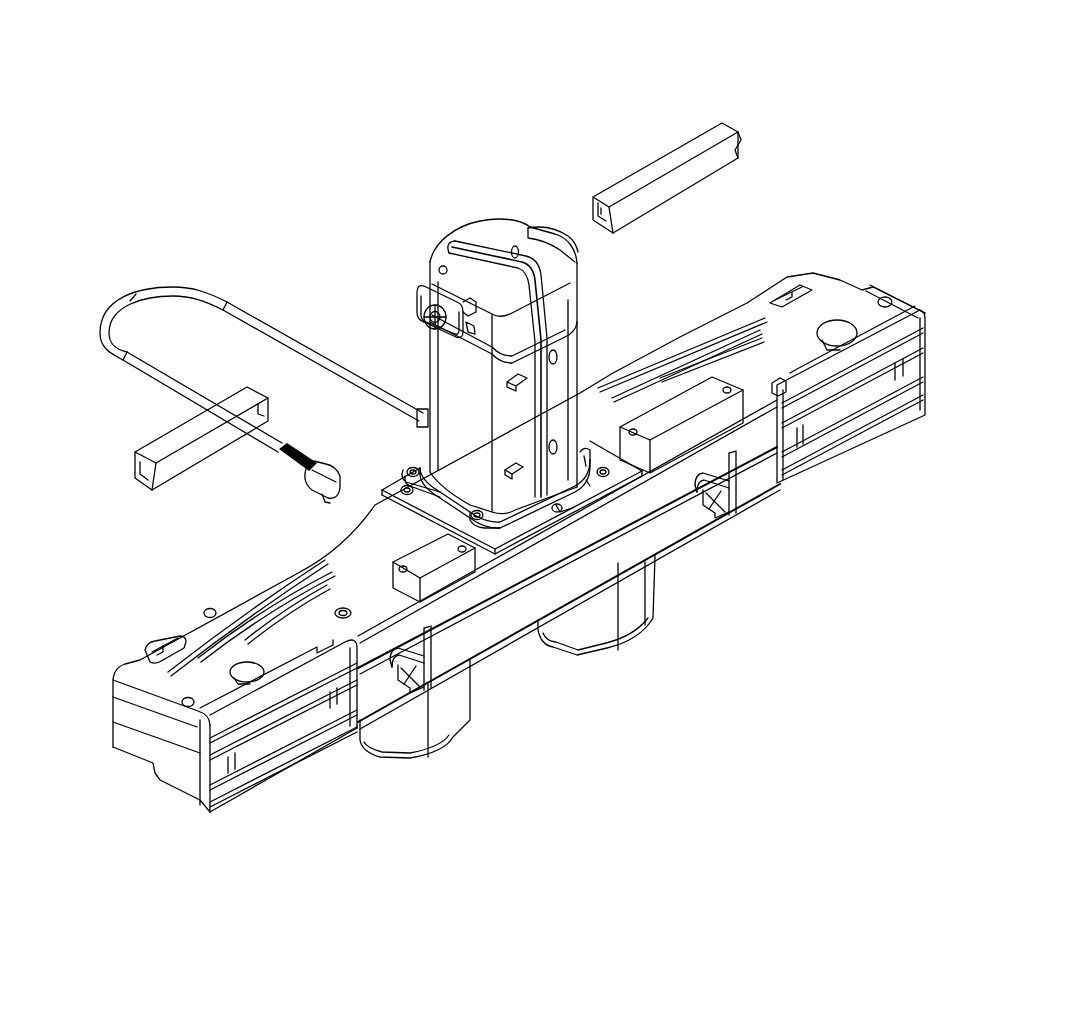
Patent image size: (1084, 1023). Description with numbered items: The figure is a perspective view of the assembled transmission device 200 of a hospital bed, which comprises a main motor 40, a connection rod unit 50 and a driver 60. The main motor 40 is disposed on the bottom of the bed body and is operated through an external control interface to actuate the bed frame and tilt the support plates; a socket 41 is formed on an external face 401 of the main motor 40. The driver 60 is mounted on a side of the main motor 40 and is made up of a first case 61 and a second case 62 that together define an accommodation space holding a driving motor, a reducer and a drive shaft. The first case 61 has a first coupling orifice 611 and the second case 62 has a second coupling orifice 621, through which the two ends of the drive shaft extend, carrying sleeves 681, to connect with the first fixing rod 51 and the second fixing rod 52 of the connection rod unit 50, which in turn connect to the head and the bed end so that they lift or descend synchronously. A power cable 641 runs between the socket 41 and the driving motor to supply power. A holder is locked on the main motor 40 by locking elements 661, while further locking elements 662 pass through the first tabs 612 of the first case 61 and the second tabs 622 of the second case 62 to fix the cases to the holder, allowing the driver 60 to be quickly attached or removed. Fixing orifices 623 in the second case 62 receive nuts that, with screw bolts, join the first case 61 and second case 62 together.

The main motor 40 is at (815, 268).
The socket 41 is at (343, 606).
The external face 401 is at (288, 635).
The connection rod unit 50 is at (699, 108).
The first fixing rod 51 is at (638, 176).
The second fixing rod 52 is at (172, 440).
The driver 60 is at (468, 182).
The first case 61 is at (513, 200).
The first coupling orifice 611 is at (541, 234).
The first tabs 612 is at (590, 480).
The second case 62 is at (425, 242).
The second coupling orifice 621 is at (418, 290).
The second tabs 622 is at (384, 486).
The fixing orifices 623 is at (512, 476).
The power cable 641 is at (176, 288).
The locking elements 661 is at (607, 474).
The locking elements 662 is at (410, 466).
The sleeves 681 is at (418, 322).
The transmission device 200 is at (591, 692).